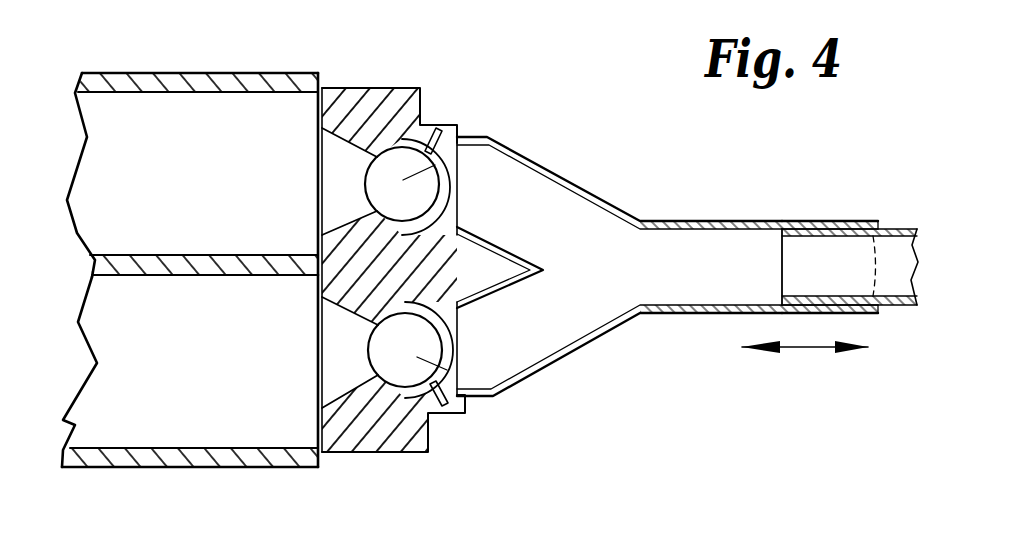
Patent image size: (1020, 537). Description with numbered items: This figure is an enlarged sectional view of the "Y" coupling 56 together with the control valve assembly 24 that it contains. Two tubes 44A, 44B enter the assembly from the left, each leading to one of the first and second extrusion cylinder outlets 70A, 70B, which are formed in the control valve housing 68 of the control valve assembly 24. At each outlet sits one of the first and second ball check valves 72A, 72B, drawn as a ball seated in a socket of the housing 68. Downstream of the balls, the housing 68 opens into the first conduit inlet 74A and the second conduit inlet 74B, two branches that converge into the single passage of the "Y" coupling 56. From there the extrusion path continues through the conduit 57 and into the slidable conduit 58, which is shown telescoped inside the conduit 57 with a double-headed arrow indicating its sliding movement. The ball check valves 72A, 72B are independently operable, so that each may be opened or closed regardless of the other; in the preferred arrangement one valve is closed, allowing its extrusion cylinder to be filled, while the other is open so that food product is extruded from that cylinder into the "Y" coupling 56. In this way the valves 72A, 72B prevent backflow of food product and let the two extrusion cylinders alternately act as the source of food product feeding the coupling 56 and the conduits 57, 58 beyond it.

The control valve assembly 24 is at (366, 84).
The upper inlet tube 44A is at (152, 105).
The lower inlet tube 44B is at (158, 423).
The "Y" coupling 56 is at (577, 238).
The conduit 57 is at (738, 222).
The slidable conduit 58 is at (887, 228).
The control valve housing 68 is at (388, 422).
The first extrusion cylinder outlet 70A is at (337, 163).
The second extrusion cylinder outlet 70B is at (340, 363).
The first ball check valve 72A is at (467, 138).
The second ball check valve 72B is at (495, 396).
The first conduit inlet 74A is at (472, 188).
The second conduit inlet 74B is at (463, 343).